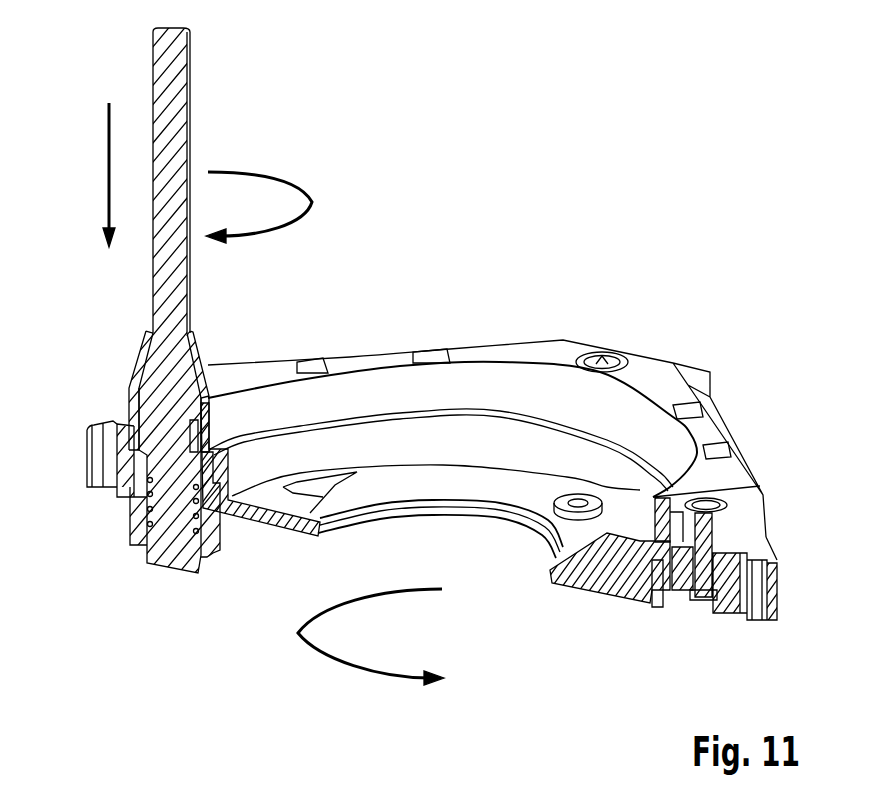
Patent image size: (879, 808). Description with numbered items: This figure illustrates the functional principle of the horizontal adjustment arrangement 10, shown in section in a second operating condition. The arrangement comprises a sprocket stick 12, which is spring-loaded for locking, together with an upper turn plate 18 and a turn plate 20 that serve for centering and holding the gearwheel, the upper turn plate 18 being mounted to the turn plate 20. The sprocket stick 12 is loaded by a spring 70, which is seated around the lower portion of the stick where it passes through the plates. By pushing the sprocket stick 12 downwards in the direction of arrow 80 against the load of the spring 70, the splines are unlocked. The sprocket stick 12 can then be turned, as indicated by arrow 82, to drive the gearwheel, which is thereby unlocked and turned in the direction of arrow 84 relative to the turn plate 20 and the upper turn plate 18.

The horizontal adjustment arrangement 10 is at (640, 232).
The sprocket stick 12 is at (175, 95).
The upper turn plate 18 is at (370, 383).
The turn plate 20 is at (443, 478).
The spring 70 is at (138, 543).
The arrow 80 is at (109, 150).
The arrow 82 is at (305, 192).
The arrow 84 is at (297, 640).